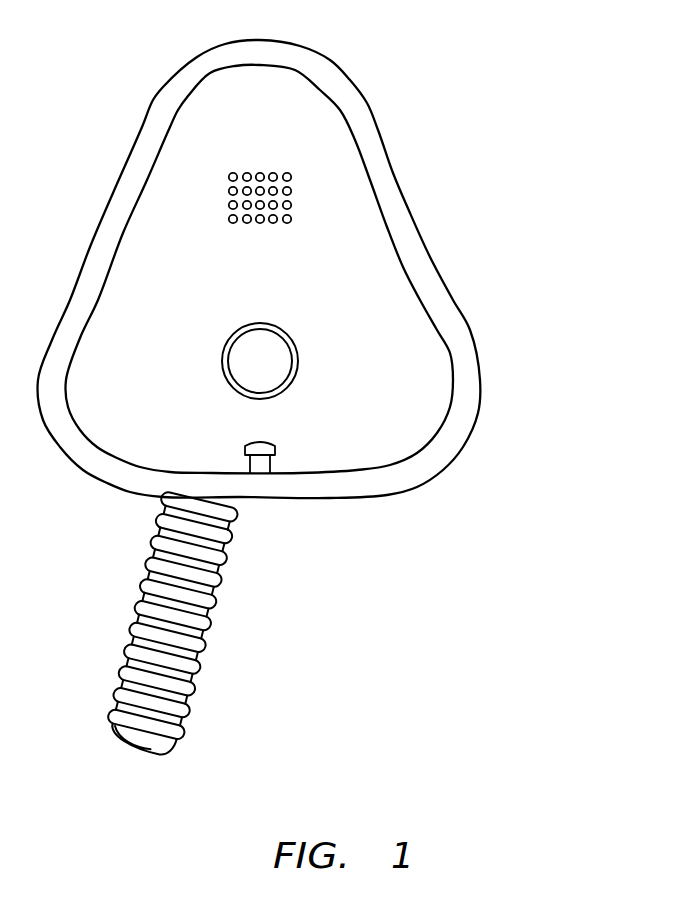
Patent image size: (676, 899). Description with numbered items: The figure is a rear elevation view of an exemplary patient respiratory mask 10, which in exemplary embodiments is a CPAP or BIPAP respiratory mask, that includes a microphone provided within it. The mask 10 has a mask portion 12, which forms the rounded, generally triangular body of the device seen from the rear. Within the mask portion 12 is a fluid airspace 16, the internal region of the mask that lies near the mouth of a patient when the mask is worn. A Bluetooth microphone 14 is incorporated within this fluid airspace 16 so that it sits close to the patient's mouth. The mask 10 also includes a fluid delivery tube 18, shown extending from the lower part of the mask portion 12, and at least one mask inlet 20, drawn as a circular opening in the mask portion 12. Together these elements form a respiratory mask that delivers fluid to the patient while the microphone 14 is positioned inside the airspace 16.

The respiratory mask 10 is at (429, 148).
The mask portion 12 is at (468, 368).
The Bluetooth microphone 14 is at (263, 452).
The fluid airspace 16 is at (386, 321).
The fluid delivery tube 18 is at (187, 688).
The mask inlet 20 is at (223, 358).